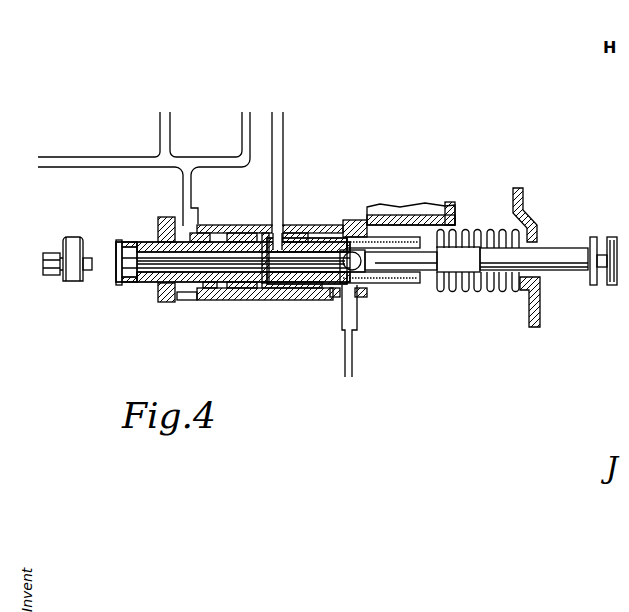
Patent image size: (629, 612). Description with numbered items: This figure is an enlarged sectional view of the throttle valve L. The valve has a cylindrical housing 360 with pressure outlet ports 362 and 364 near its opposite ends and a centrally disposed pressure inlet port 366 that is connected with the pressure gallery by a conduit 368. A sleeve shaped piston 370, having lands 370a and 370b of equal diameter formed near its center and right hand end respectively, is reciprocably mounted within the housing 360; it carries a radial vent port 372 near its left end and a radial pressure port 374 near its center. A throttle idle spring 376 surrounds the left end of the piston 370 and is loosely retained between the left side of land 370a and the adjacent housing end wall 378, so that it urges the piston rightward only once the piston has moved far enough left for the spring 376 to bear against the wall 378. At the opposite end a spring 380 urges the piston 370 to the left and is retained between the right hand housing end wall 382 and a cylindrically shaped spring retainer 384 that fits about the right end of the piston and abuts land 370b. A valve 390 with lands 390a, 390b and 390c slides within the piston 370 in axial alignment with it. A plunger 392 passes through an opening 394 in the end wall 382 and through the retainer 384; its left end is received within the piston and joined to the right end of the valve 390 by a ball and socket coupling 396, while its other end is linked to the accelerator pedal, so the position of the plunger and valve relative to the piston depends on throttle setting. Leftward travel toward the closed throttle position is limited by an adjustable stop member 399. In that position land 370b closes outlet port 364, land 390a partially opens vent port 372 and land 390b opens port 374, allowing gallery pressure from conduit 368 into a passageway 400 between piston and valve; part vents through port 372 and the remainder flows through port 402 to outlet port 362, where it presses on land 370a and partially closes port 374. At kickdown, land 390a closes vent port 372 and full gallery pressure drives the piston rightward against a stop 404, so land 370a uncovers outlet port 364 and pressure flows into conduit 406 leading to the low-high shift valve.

The throttle valve L is at (294, 130).
The cylindrical housing 360 is at (290, 222).
The pressure outlet port 362 is at (190, 212).
The pressure outlet port 364 is at (357, 303).
The pressure inlet port 366 is at (266, 232).
The conduit 368 is at (279, 156).
The sleeve shaped piston 370 is at (147, 283).
The land 370a is at (252, 300).
The land 370b is at (356, 312).
The radial vent port 372 is at (127, 281).
The radial pressure port 374 is at (274, 288).
The throttle idle spring 376 is at (213, 303).
The housing end wall 378 is at (177, 303).
The spring 380 is at (462, 228).
The housing end wall 382 is at (524, 213).
The spring retainer 384 is at (398, 242).
The valve 390 is at (143, 247).
The land 390a is at (127, 248).
The land 390b is at (264, 226).
The land 390c is at (305, 257).
The plunger 392 is at (555, 252).
The opening 394 is at (483, 288).
The ball and socket coupling 396 is at (377, 270).
The adjustable stop member 399 is at (80, 242).
The passageway 400 is at (152, 242).
The port 402 is at (210, 295).
The stop 404 is at (347, 225).
The conduit 406 is at (353, 355).